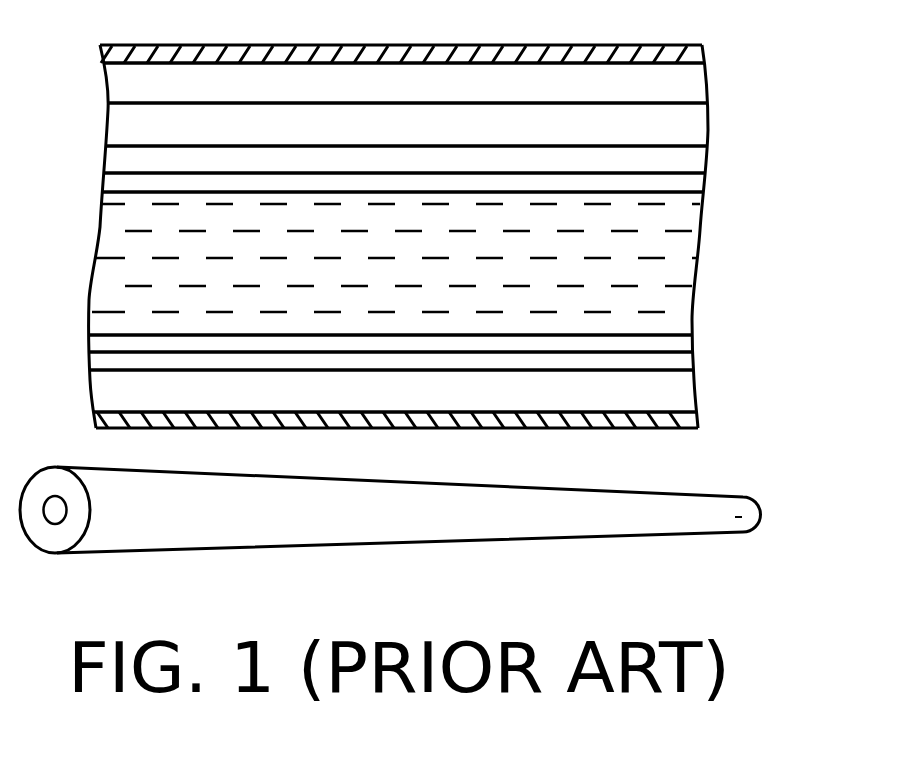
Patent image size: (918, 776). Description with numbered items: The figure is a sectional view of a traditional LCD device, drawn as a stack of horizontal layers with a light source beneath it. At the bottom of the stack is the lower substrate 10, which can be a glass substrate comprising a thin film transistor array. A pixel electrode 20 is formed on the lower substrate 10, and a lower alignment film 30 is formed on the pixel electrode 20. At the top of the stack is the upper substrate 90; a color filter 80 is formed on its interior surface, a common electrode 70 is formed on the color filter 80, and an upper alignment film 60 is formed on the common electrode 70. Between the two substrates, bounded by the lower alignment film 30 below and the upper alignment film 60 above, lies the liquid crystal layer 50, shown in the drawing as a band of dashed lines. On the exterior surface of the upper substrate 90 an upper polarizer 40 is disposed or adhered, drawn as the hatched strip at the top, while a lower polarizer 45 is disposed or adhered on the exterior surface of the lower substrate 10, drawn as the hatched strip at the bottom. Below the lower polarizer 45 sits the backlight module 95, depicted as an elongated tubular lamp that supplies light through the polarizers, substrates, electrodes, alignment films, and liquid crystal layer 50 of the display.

The lower substrate 10 is at (680, 392).
The pixel electrode 20 is at (678, 363).
The lower alignment film 30 is at (678, 345).
The upper polarizer 40 is at (702, 52).
The lower polarizer 45 is at (695, 420).
The liquid crystal layer 50 is at (687, 270).
The upper alignment film 60 is at (695, 188).
The common electrode 70 is at (696, 165).
The color filter 80 is at (695, 130).
The upper substrate 90 is at (695, 90).
The backlight module 95 is at (750, 515).